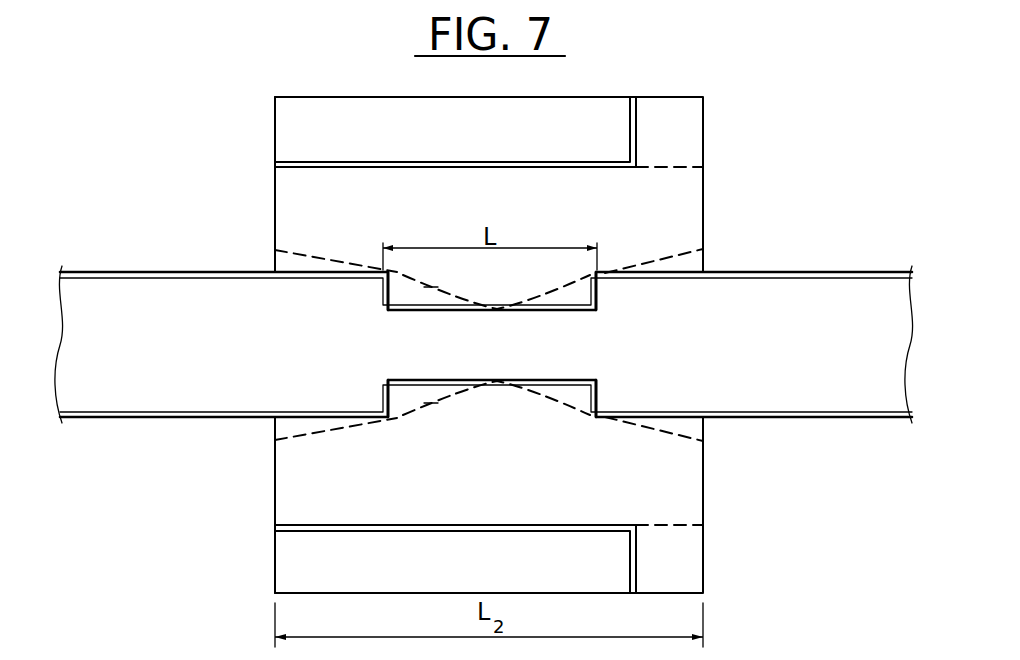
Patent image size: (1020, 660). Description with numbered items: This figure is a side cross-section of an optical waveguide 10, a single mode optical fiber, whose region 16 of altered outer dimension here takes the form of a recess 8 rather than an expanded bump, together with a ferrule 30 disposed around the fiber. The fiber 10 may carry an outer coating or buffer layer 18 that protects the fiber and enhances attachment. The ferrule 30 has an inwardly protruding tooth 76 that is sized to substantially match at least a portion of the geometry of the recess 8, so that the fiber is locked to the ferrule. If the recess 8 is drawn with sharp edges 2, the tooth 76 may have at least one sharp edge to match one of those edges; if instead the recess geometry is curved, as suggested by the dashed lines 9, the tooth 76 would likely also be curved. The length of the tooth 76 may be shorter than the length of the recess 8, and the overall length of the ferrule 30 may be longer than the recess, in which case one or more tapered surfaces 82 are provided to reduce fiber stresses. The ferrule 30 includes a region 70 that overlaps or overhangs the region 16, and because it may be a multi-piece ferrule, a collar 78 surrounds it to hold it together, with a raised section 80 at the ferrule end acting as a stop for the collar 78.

The sharp edges 2 is at (383, 297).
The recess 8 is at (488, 307).
The dashed lines 9 is at (429, 401).
The optical waveguide 10 is at (114, 268).
The region 16 is at (379, 370).
The outer coating or buffer layer 18 is at (195, 272).
The ferrule 30 is at (270, 211).
The region 70 is at (453, 217).
The tooth 76 is at (580, 291).
The collar 78 is at (472, 146).
The raised section 80 is at (698, 134).
The tapered surfaces 82 is at (316, 258).